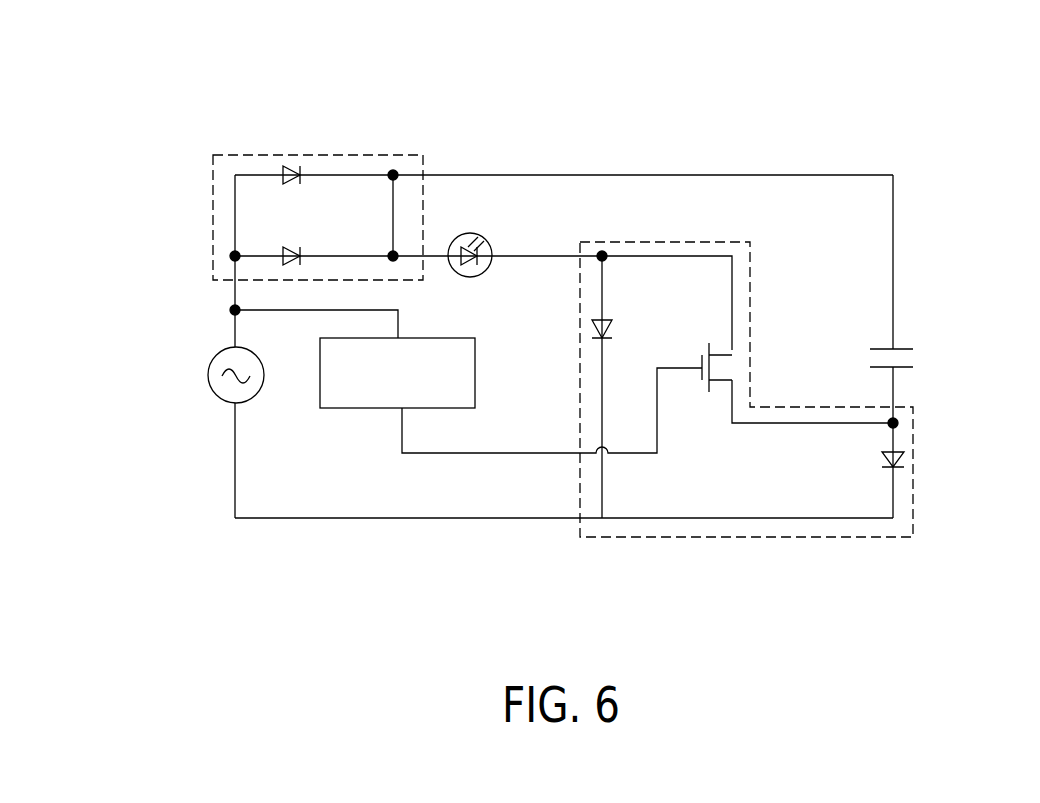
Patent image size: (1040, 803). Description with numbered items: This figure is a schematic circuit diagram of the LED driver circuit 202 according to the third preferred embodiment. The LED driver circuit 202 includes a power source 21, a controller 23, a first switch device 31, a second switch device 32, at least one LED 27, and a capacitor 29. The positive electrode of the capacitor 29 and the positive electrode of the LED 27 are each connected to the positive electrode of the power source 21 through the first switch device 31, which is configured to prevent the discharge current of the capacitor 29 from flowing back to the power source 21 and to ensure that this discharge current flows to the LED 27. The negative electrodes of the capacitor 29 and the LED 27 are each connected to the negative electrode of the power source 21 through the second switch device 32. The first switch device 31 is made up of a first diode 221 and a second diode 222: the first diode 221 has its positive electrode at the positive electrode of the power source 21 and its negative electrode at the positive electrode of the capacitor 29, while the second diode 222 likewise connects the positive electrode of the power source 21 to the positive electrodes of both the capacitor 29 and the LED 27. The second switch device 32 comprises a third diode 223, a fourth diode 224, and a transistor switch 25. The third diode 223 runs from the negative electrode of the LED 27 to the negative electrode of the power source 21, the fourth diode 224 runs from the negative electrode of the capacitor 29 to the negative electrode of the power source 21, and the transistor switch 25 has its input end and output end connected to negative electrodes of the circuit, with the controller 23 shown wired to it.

The LED driver circuit 202 is at (921, 101).
The power source 21 is at (213, 362).
The first diode 221 is at (300, 170).
The second diode 222 is at (302, 262).
The third diode 223 is at (612, 325).
The fourth diode 224 is at (905, 460).
The controller 23 is at (478, 396).
The transistor switch 25 is at (722, 392).
The LED 27 is at (488, 244).
The capacitor 29 is at (900, 346).
The first switch device 31 is at (385, 155).
The second switch device 32 is at (830, 538).